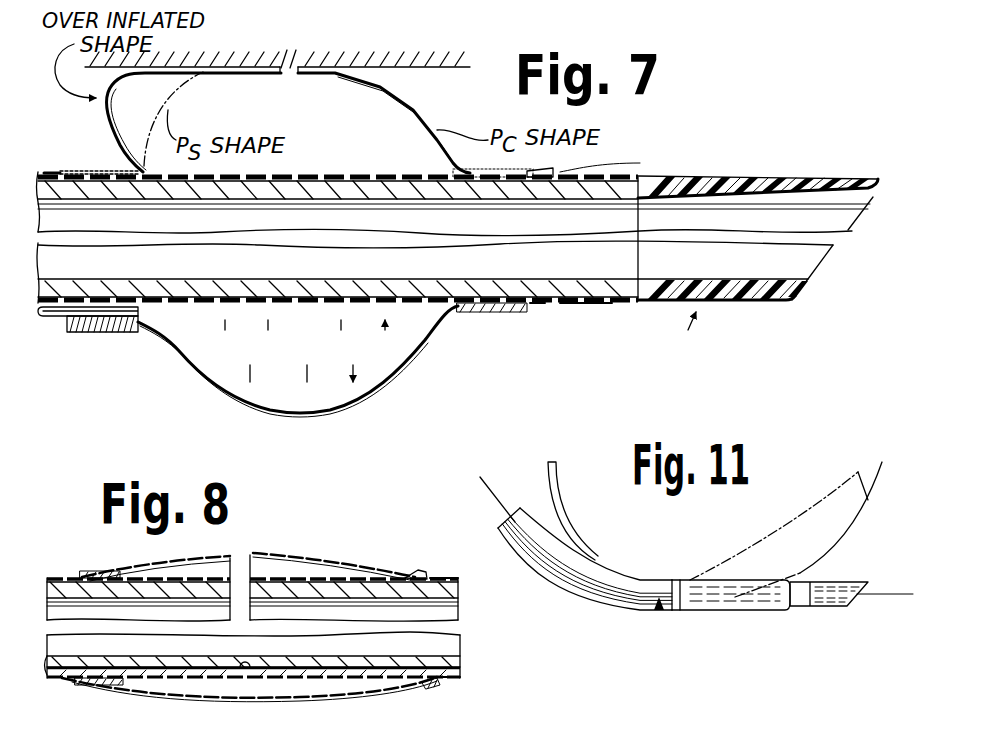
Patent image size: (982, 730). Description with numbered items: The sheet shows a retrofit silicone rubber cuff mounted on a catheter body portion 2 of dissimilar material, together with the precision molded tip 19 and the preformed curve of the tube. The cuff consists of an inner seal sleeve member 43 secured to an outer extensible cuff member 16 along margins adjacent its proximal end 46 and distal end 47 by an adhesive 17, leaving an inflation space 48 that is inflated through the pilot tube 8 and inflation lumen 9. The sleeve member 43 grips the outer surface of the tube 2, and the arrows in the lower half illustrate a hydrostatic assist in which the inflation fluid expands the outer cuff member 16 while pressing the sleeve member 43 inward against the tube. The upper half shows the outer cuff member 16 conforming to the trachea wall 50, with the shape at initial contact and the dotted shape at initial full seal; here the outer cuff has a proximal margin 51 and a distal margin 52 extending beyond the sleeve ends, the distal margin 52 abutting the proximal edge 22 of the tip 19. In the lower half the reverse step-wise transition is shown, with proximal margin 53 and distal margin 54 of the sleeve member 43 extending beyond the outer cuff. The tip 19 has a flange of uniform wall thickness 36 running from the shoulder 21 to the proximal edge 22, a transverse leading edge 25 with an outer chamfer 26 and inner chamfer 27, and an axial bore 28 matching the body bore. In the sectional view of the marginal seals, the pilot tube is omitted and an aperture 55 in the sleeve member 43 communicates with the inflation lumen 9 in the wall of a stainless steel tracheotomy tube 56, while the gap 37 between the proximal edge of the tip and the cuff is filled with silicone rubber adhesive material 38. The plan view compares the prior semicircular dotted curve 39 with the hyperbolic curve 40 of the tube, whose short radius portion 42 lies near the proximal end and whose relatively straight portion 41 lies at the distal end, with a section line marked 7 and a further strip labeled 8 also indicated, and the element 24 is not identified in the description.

In FIG. 7, the body portion 2 is at (252, 188).
In FIG. 8, the body portion 2 is at (253, 616).
In FIG. 11, the section line 7 is at (517, 512).
In FIG. 7, the pilot tube 8 is at (47, 328).
In FIG. 11, the pilot tube 8 is at (560, 496).
In FIG. 7, the inflation lumen 9 is at (43, 316).
In FIG. 8, the inflation lumen 9 is at (50, 661).
In FIG. 7, the outer extensible cuff member 16 is at (338, 409).
In FIG. 8, the outer extensible cuff member 16 is at (305, 558).
In FIG. 7, the adhesive 17 is at (140, 307).
In FIG. 7, the tip 19 is at (693, 335).
In FIG. 7, the shoulder 21 is at (645, 184).
In FIG. 7, the proximal edge 22 is at (590, 171).
In FIG. 8, the proximal edge 22 is at (437, 581).
In FIG. 7, the reinforced wall section 24 is at (807, 177).
In FIG. 7, the transverse leading edge 25 is at (830, 258).
In FIG. 7, the outer chamfer or rounded edge 26 is at (877, 187).
In FIG. 7, the inner chamfer or rounded edge 27 is at (862, 205).
In FIG. 7, the axial bore 28 is at (727, 279).
In FIG. 7, the uniform wall thickness 36 is at (600, 305).
In FIG. 8, the gap 37 is at (430, 581).
In FIG. 8, the silicone rubber adhesive material 38 is at (430, 688).
In FIG. 11, the dotted curve 39 is at (807, 549).
In FIG. 11, the hyperbolic curve 40 is at (657, 610).
In FIG. 11, the relatively straight portion of the curve 41 is at (838, 607).
In FIG. 11, the short radius portion of the curve 42 is at (547, 556).
In FIG. 7, the inner seal sleeve member 43 is at (305, 302).
In FIG. 8, the inner seal sleeve member 43 is at (345, 582).
In FIG. 7, the proximal end 46 is at (52, 182).
In FIG. 7, the distal end 47 is at (533, 176).
In FIG. 7, the inflation space 48 is at (337, 130).
In FIG. 8, the inflation space 48 is at (227, 687).
In FIG. 7, the trachea wall 50 is at (258, 55).
In FIG. 7, the proximal margin 51 is at (58, 173).
In FIG. 7, the distal margin 52 is at (548, 175).
In FIG. 8, the distal margin 52 is at (418, 572).
In FIG. 7, the proximal margin 53 is at (60, 295).
In FIG. 8, the proximal margin 53 is at (72, 577).
In FIG. 7, the distal margin 54 is at (537, 303).
In FIG. 8, the aperture 55 is at (250, 670).
In FIG. 8, the stainless steel tracheotomy tube 56 is at (460, 586).